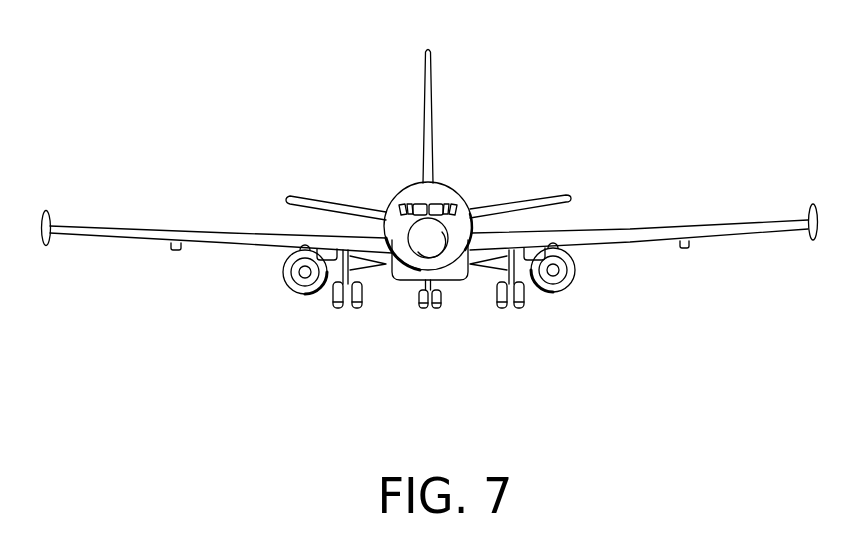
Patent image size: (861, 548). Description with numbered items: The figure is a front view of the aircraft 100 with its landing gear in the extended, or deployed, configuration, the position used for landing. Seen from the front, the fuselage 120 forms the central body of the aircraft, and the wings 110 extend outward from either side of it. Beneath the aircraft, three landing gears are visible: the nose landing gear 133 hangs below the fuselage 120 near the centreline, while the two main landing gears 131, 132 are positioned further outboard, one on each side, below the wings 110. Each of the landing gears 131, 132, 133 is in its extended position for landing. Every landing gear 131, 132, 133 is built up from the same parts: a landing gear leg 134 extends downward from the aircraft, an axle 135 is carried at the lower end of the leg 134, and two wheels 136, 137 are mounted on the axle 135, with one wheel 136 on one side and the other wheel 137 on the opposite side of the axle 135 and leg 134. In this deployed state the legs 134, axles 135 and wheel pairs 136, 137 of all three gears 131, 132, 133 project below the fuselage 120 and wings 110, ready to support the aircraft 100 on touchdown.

The aircraft 100 is at (627, 79).
The wings 110 is at (156, 236).
The fuselage 120 is at (436, 194).
The main landing gear 131 is at (345, 318).
The main landing gear 132 is at (512, 327).
The nose landing gear 133 is at (433, 318).
The landing gear leg 134 is at (476, 276).
The axle 135 is at (513, 310).
The wheel 136 is at (333, 297).
The wheel 137 is at (362, 300).